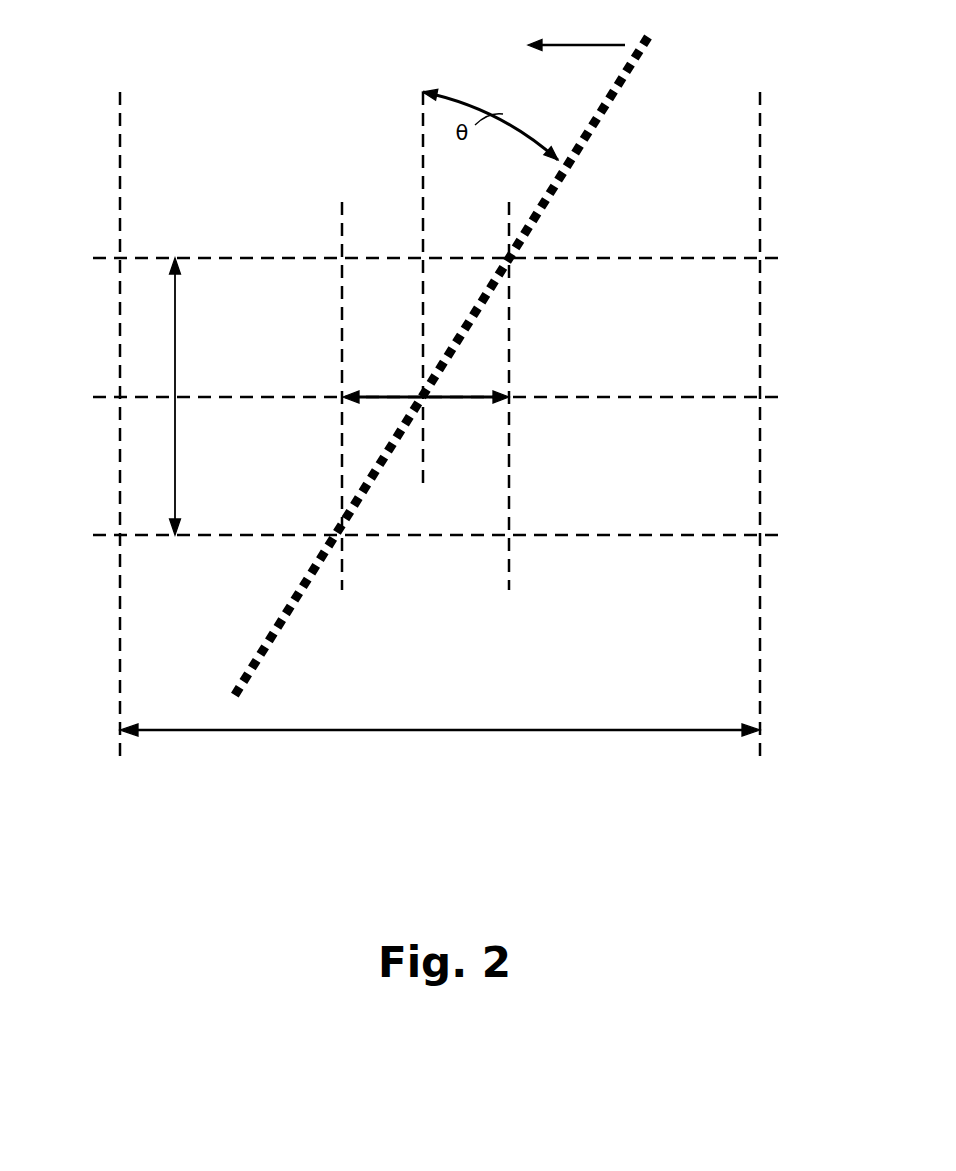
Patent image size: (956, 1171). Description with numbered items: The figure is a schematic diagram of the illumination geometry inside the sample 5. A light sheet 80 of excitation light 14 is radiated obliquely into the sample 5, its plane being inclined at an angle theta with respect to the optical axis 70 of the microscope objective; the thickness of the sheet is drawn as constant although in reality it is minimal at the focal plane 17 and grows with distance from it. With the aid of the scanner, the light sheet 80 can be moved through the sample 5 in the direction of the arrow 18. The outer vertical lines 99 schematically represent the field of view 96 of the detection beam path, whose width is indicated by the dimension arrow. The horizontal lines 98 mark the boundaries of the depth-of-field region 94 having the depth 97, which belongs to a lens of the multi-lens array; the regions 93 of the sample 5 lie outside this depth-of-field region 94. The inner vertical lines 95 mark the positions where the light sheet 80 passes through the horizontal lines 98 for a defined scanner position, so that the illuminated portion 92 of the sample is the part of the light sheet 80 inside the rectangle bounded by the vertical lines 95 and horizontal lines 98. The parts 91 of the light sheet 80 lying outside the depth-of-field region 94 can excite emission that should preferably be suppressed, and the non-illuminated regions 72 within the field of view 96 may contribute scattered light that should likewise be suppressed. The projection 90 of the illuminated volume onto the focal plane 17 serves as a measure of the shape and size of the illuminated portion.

The sample 5 is at (717, 627).
The excitation light 14 is at (552, 188).
The focal plane 17 is at (414, 401).
The arrow 18 is at (576, 35).
The optical axis 70 is at (427, 275).
The non-illuminated regions 72 is at (280, 374).
The light sheet 80 is at (638, 55).
The projection of the illuminated volume 90 is at (410, 395).
The parts of the light sheet outside the depth-of-field region 91 is at (240, 682).
The illuminated portion of the sample 92 is at (378, 475).
The regions outside the depth-of-field region 93 is at (161, 207).
The depth-of-field region 94 is at (216, 487).
The vertical lines 95 is at (422, 398).
The field of view 96 is at (445, 733).
The depth 97 is at (193, 396).
The horizontal lines 98 is at (439, 403).
The vertical lines 99 is at (442, 429).